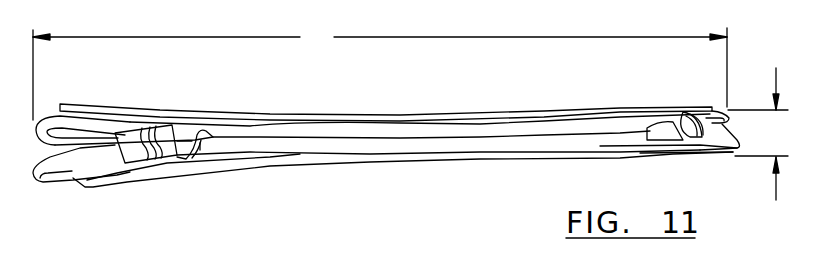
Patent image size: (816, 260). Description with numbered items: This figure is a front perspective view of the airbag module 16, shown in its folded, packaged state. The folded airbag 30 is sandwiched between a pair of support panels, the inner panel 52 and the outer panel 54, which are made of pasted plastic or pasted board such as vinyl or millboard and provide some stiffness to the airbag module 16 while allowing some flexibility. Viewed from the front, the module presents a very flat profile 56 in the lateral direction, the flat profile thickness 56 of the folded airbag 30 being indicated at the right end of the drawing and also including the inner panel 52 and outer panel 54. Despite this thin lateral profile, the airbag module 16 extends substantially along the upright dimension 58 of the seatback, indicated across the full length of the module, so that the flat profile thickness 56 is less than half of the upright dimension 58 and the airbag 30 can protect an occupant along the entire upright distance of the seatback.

The airbag module 16 is at (178, 87).
The airbag 30 is at (77, 175).
The inner panel 52 is at (643, 108).
The outer panel 54 is at (627, 160).
The flat profile thickness 56 is at (759, 134).
The upright dimension 58 is at (380, 73).